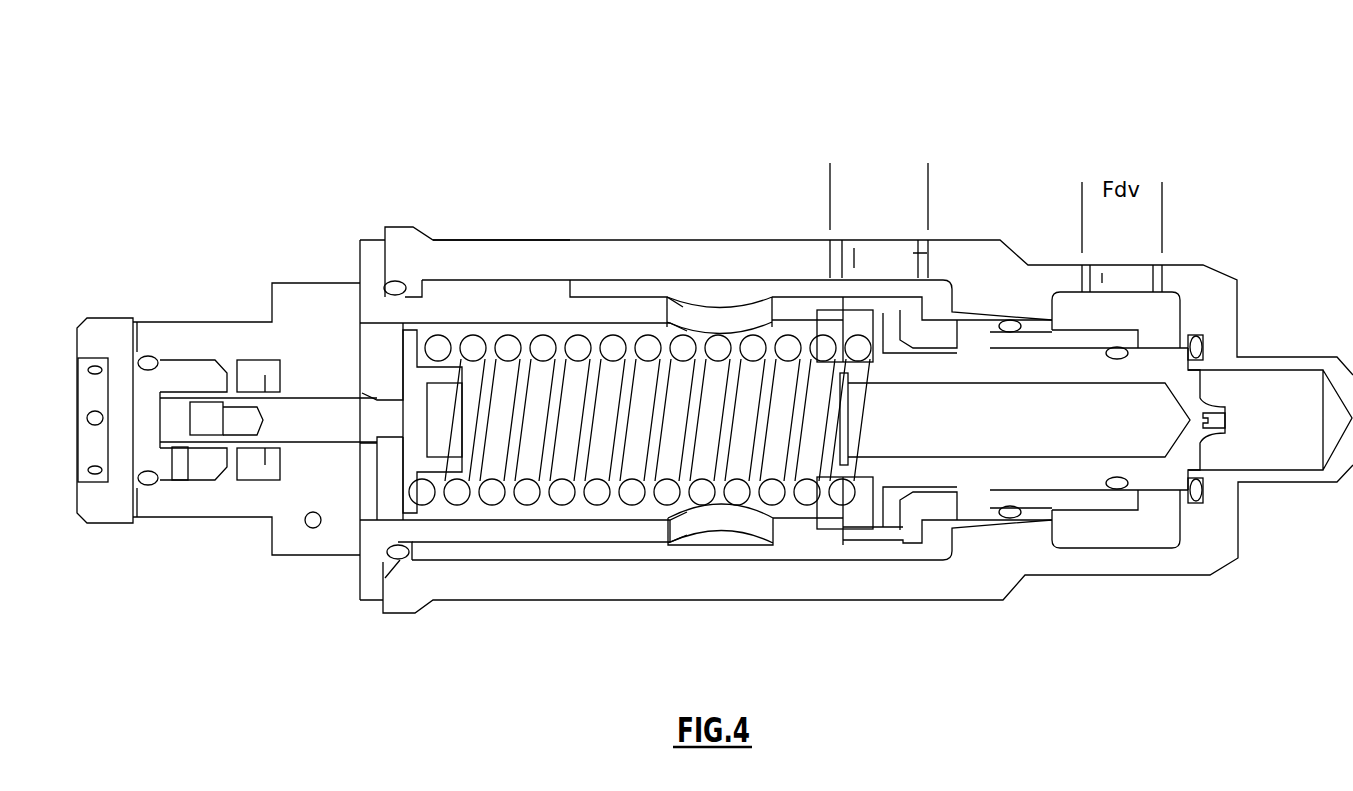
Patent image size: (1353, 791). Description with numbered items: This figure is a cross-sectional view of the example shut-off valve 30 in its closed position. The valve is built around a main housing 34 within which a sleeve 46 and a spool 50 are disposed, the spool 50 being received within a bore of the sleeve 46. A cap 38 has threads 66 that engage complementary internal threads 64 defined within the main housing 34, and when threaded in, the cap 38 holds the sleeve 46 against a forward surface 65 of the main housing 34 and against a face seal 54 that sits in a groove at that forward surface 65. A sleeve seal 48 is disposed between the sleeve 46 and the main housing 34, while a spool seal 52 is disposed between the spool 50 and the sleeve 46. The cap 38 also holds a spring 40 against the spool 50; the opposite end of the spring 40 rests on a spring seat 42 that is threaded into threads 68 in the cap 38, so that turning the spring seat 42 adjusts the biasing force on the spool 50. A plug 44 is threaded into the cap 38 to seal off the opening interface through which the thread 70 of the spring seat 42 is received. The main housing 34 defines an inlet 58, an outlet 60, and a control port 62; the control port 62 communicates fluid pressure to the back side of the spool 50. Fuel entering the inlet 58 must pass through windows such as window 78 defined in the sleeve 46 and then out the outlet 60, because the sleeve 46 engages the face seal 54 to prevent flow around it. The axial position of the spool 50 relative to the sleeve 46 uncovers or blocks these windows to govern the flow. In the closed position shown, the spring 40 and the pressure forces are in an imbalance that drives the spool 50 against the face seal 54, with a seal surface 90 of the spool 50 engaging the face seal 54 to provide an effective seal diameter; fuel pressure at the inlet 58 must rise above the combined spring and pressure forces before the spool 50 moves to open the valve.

The shut-off valve 30 is at (1195, 78).
The main housing 34 is at (527, 255).
The cap 38 is at (600, 310).
The spring 40 is at (430, 350).
The spring seat 42 is at (322, 413).
The plug 44 is at (105, 332).
The sleeve 46 is at (965, 498).
The sleeve seal 48 is at (1012, 518).
The spool 50 is at (870, 468).
The spool seal 52 is at (1117, 490).
The face seal 54 is at (1203, 345).
The inlet 58 is at (1310, 388).
The outlet 60 is at (1145, 278).
The control port 62 is at (930, 250).
The internal threads 64 is at (487, 268).
The forward surface 65 is at (1188, 512).
The threads 66 is at (548, 297).
The threads 68 is at (347, 436).
The thread 70 is at (318, 447).
The window 78 is at (1160, 328).
The seal surface 90 is at (1197, 470).